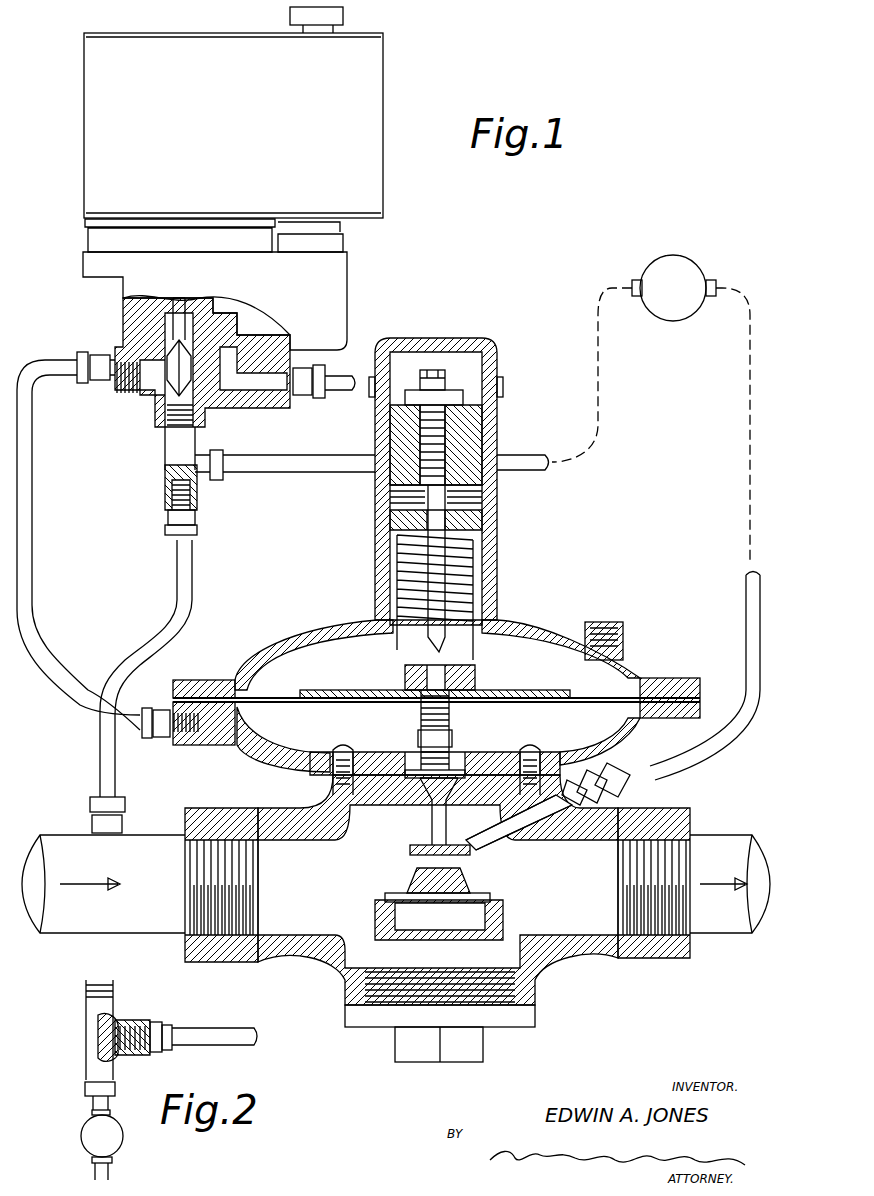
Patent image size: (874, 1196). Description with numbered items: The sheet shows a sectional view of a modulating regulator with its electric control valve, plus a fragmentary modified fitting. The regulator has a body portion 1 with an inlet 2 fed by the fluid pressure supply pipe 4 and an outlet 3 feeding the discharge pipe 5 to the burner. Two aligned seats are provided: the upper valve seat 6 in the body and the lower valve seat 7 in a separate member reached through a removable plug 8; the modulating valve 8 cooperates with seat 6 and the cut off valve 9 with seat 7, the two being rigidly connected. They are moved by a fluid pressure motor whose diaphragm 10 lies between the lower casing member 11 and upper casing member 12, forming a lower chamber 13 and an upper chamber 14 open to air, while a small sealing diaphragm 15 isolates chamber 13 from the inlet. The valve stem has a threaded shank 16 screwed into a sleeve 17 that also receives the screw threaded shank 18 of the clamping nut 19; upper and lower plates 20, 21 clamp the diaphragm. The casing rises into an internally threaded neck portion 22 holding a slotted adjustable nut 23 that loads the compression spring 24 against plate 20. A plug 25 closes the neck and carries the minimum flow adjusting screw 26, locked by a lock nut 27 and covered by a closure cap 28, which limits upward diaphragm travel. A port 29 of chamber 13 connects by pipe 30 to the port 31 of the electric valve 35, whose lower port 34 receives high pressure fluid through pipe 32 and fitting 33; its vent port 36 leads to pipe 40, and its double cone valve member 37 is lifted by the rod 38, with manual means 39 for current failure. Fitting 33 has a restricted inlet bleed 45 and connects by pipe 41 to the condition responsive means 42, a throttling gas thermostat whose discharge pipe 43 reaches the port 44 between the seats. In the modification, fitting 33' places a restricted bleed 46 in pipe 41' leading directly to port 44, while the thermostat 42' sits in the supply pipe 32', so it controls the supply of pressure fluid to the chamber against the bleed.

In FIG. 1, the body portion 1 is at (330, 960).
In FIG. 1, the inlet 2 is at (300, 905).
In FIG. 1, the outlet 3 is at (592, 920).
In FIG. 1, the fluid pressure supply pipe 4 is at (55, 840).
In FIG. 1, the discharge pipe 5 is at (735, 935).
In FIG. 1, the upper valve seat 6 is at (455, 828).
In FIG. 1, the lower valve seat 7 is at (462, 935).
In FIG. 1, the modulating valve 8 is at (388, 860).
In FIG. 1, the cut off valve 9 is at (490, 898).
In FIG. 1, the diaphragm 10 is at (590, 680).
In FIG. 1, the lower casing member 11 is at (262, 757).
In FIG. 1, the upper casing member 12 is at (318, 624).
In FIG. 1, the lower chamber 13 is at (300, 762).
In FIG. 1, the upper chamber 14 is at (624, 650).
In FIG. 1, the sealing diaphragm 15 is at (492, 762).
In FIG. 1, the threaded shank 16 is at (418, 738).
In FIG. 1, the sleeve 17 is at (466, 730).
In FIG. 1, the screw threaded shank 18 is at (420, 718).
In FIG. 1, the clamping member or nut 19 is at (470, 680).
In FIG. 1, the upper plate 20 is at (330, 690).
In FIG. 1, the lower plate 21 is at (330, 705).
In FIG. 1, the internally threaded neck portion 22 is at (500, 556).
In FIG. 1, the adjustable nut 23 is at (500, 513).
In FIG. 1, the compression spring 24 is at (475, 588).
In FIG. 1, the plug 25 is at (500, 442).
In FIG. 1, the minimum flow adjusting screw 26 is at (420, 521).
In FIG. 1, the lock nut 27 is at (450, 390).
In FIG. 1, the closure cap 28 is at (500, 390).
In FIG. 1, the port 29 is at (200, 742).
In FIG. 1, the pipe 30 is at (35, 575).
In FIG. 1, the port 31 is at (145, 370).
In FIG. 1, the pipe 32 is at (161, 686).
In FIG. 1, the fitting 33 is at (169, 453).
In FIG. 1, the lower port 34 is at (205, 410).
In FIG. 1, the electric valve 35 is at (233, 125).
In FIG. 1, the vent or discharge port 36 is at (206, 300).
In FIG. 1, the valve member 37 is at (185, 365).
In FIG. 1, the rod 38 is at (178, 300).
In FIG. 1, the manual means 39 is at (290, 17).
In FIG. 1, the pipe 40 is at (340, 396).
In FIG. 1, the pipe 41 is at (299, 480).
In FIG. 1, the condition responsive means 42 is at (651, 395).
In FIG. 1, the pipe 43 is at (748, 720).
In FIG. 1, the port 44 is at (575, 846).
In FIG. 1, the restricted inlet bleed 45 is at (165, 485).
In FIG. 2, the restricted bleed 46 is at (128, 1030).
In FIG. 2, the fitting 33' is at (78, 1030).
In FIG. 2, the pipe 41' is at (214, 1017).
In FIG. 2, the throttling gas thermostat 42' is at (83, 1122).
In FIG. 2, the pipe 32' is at (79, 1166).